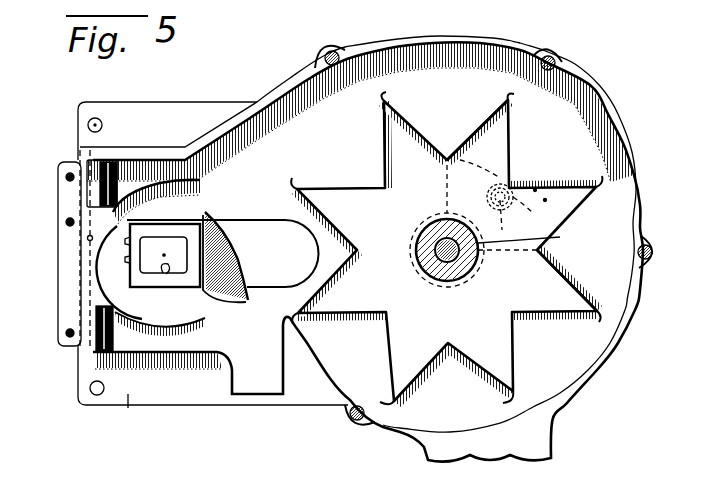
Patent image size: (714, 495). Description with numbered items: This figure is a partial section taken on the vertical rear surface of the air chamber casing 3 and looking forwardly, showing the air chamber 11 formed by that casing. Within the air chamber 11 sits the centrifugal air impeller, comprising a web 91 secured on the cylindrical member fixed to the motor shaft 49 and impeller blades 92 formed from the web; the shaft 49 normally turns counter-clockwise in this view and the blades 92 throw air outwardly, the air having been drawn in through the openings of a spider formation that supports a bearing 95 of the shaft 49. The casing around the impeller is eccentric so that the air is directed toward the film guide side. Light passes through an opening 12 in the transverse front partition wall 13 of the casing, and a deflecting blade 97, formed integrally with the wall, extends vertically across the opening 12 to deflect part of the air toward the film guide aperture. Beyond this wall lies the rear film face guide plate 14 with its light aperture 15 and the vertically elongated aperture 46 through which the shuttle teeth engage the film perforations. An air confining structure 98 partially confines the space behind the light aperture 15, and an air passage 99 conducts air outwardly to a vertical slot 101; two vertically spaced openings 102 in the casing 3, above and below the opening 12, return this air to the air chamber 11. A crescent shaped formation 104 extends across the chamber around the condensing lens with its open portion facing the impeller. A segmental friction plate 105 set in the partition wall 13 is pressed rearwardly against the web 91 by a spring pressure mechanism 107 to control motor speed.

The air chamber casing 3 is at (515, 188).
The air chamber 11 is at (397, 63).
The opening 12 is at (127, 257).
The transverse front partition wall 13 is at (313, 108).
The rear film face guide plate 14 is at (152, 277).
The light aperture 15 is at (163, 273).
The vertically elongated aperture 46 is at (203, 214).
The motor shaft 49 is at (478, 240).
The web 91 is at (545, 330).
The impeller blades 92 is at (500, 180).
The bearing 95 is at (478, 258).
The deflecting blade 97 is at (240, 240).
The air confining structure 98 is at (107, 222).
The air passage 99 is at (105, 215).
The vertical slot 101 is at (88, 238).
The openings 102 is at (100, 167).
The crescent shaped formation 104 is at (147, 325).
The segmental friction plate 105 is at (545, 200).
The spring pressure mechanism 107 is at (535, 190).